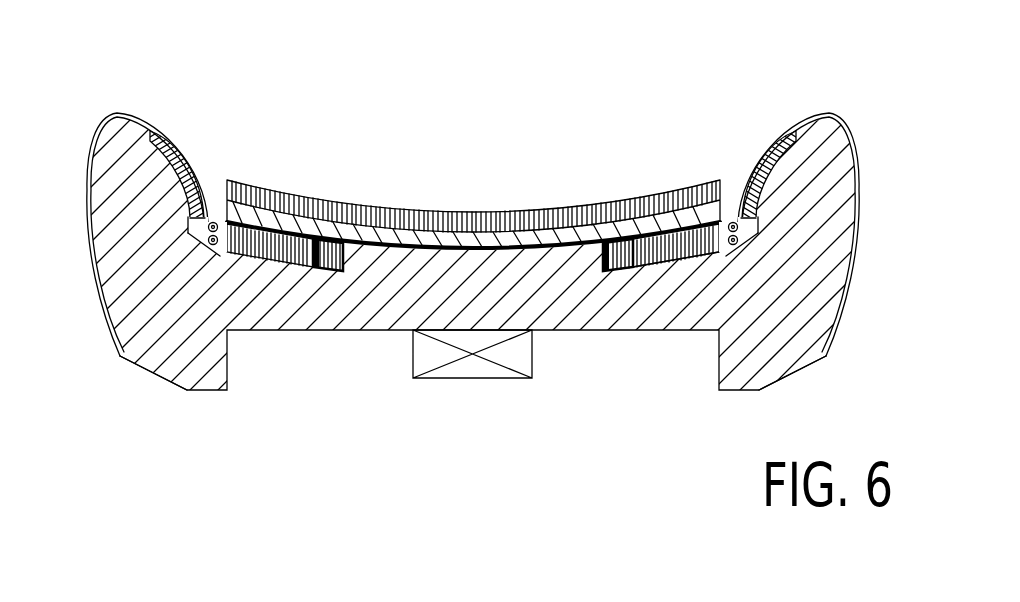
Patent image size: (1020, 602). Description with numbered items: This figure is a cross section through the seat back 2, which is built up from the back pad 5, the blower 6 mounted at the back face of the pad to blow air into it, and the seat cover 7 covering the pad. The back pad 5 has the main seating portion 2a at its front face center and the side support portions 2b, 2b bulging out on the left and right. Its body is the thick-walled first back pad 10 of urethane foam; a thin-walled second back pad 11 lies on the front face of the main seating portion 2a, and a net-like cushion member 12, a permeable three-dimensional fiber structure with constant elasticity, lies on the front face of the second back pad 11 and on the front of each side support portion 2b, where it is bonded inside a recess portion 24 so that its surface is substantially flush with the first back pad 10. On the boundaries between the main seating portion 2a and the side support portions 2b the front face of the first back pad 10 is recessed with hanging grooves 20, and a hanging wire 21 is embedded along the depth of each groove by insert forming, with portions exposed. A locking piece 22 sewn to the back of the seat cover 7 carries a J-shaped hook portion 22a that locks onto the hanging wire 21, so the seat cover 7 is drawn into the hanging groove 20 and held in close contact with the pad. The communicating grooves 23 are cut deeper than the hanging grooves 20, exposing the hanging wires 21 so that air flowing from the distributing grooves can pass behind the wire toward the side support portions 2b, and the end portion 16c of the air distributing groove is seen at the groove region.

The seat back 2 is at (851, 346).
The main seating portion 2a is at (549, 262).
The side support portion 2b is at (845, 206).
The back pad 5 is at (558, 82).
The blower 6 is at (475, 370).
The seat cover 7 is at (212, 222).
The first back pad 10 is at (415, 303).
The second back pad 11 is at (468, 235).
The net-like cushion member 12 is at (752, 165).
The end portion 16c is at (631, 238).
The hanging groove 20 is at (758, 238).
The hanging wire 21 is at (213, 252).
The locking piece 22 is at (245, 232).
The hook portion 22a is at (710, 250).
The communicating groove 23 is at (653, 248).
The recess portion 24 is at (815, 122).